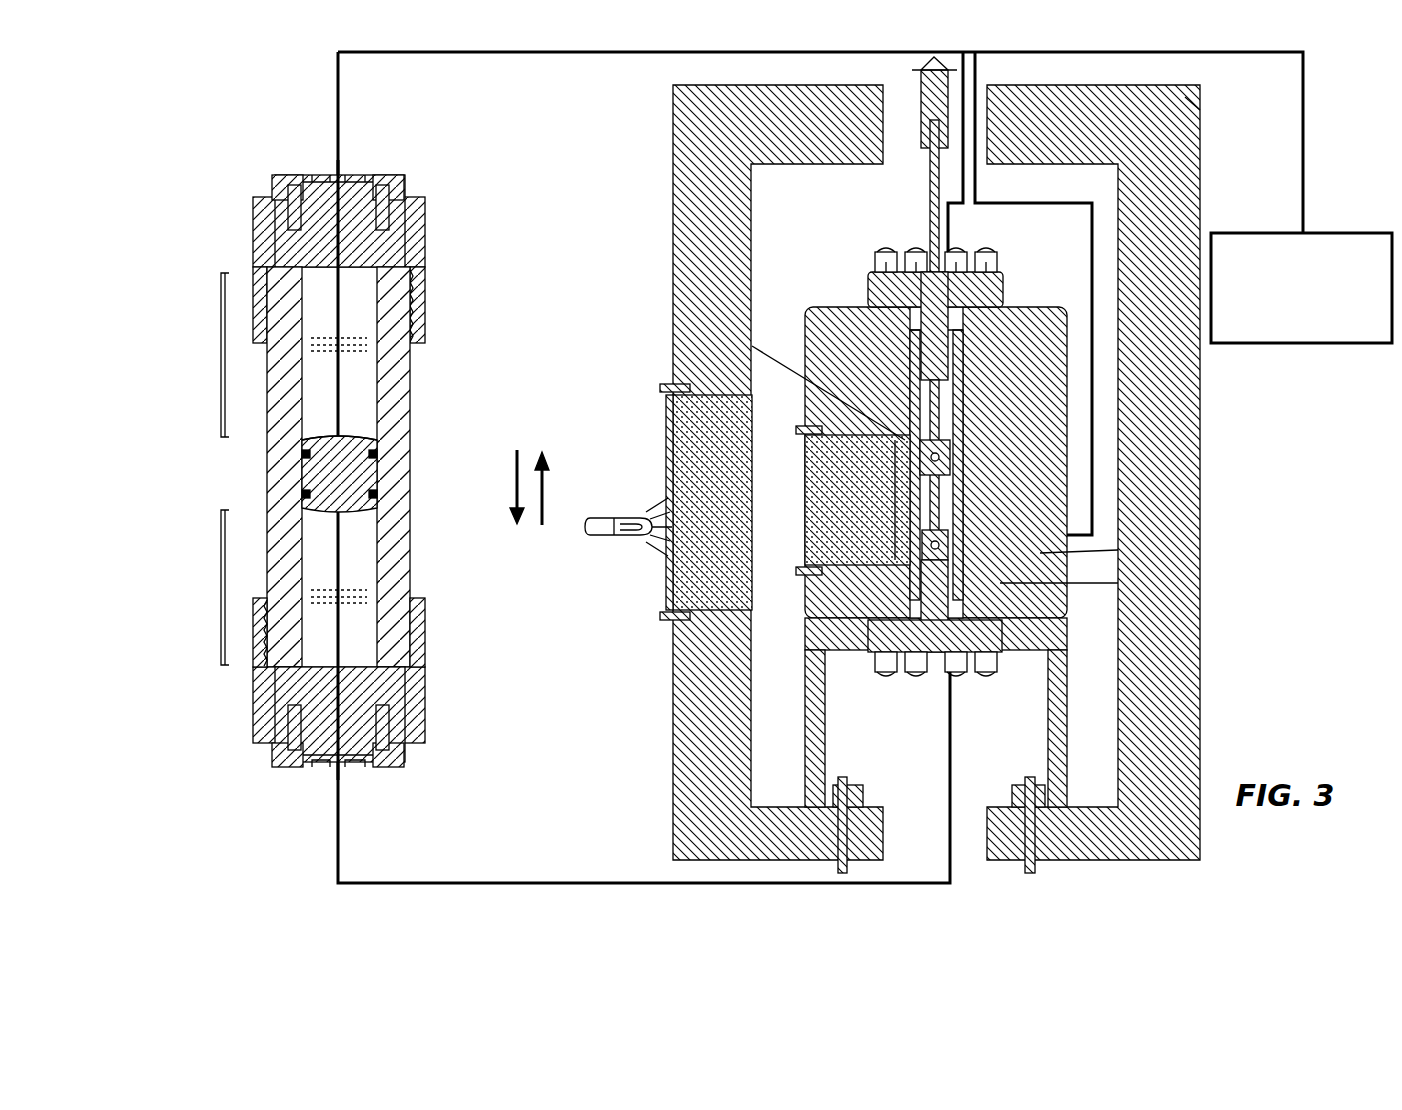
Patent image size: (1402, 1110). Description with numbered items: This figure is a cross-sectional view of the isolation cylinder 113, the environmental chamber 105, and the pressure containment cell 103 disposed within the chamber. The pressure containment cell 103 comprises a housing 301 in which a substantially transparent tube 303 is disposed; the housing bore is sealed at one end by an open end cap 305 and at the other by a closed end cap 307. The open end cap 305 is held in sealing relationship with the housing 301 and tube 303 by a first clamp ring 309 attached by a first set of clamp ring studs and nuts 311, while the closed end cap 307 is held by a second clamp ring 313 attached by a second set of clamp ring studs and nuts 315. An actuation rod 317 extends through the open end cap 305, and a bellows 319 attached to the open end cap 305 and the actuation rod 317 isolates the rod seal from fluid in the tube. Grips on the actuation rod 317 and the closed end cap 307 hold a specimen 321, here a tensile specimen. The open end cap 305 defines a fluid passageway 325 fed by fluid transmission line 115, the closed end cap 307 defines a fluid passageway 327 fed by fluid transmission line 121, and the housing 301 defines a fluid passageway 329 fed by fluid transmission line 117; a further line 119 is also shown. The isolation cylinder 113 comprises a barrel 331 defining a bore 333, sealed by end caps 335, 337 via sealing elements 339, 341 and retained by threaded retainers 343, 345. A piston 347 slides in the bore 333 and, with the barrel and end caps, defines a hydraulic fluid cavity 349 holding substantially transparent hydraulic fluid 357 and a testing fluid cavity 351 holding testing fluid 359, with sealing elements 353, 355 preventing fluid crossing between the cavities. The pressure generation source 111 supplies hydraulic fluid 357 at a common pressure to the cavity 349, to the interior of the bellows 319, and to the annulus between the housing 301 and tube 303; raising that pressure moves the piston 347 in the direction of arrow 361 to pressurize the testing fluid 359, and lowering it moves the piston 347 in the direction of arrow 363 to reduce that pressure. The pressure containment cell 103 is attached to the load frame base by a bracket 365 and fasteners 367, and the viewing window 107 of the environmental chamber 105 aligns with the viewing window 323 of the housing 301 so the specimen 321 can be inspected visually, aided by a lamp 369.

The pressure containment cell 103 is at (1072, 602).
The environmental chamber 105 is at (1203, 103).
The viewing window 107 is at (706, 502).
The pressure generation source 111 is at (1300, 343).
The isolation cylinder 113 is at (327, 459).
The fluid transmission line 115 is at (958, 234).
The fluid transmission line 117 is at (1092, 240).
The conduit 119 is at (620, 55).
The fluid transmission line 121 is at (510, 883).
The housing 301 is at (936, 462).
The substantially transparent tube 303 is at (752, 346).
The open end cap 305 is at (888, 292).
The closed end cap 307 is at (840, 618).
The first clamp ring 309 is at (895, 262).
The first set of clamp ring studs and nuts 311 is at (878, 252).
The second clamp ring 313 is at (875, 636).
The second set of clamp ring studs and nuts 315 is at (878, 660).
The actuation rod 317 is at (905, 345).
The bellows 319 is at (905, 400).
The specimen 321 is at (900, 490).
The viewing window 323 is at (853, 500).
The fluid passageway 325 is at (1003, 318).
The fluid passageway 327 is at (1118, 583).
The fluid passageway 329 is at (1118, 550).
The barrel 331 is at (402, 362).
The bore 333 is at (380, 405).
The end cap 335 is at (262, 206).
The end cap 337 is at (424, 712).
The sealing element 339 is at (414, 303).
The sealing element 341 is at (266, 672).
The retainer 343 is at (426, 262).
The retainer 345 is at (426, 662).
The piston 347 is at (339, 474).
The hydraulic fluid cavity 349 is at (222, 357).
The testing fluid cavity 351 is at (222, 588).
The sealing element 353 is at (302, 455).
The sealing element 355 is at (302, 495).
The hydraulic fluid 357 is at (348, 470).
The testing fluid 359 is at (367, 568).
The arrow 361 is at (514, 477).
The arrow 363 is at (548, 500).
The bracket 365 is at (828, 752).
The fasteners 367 is at (845, 780).
The lamp 369 is at (615, 537).